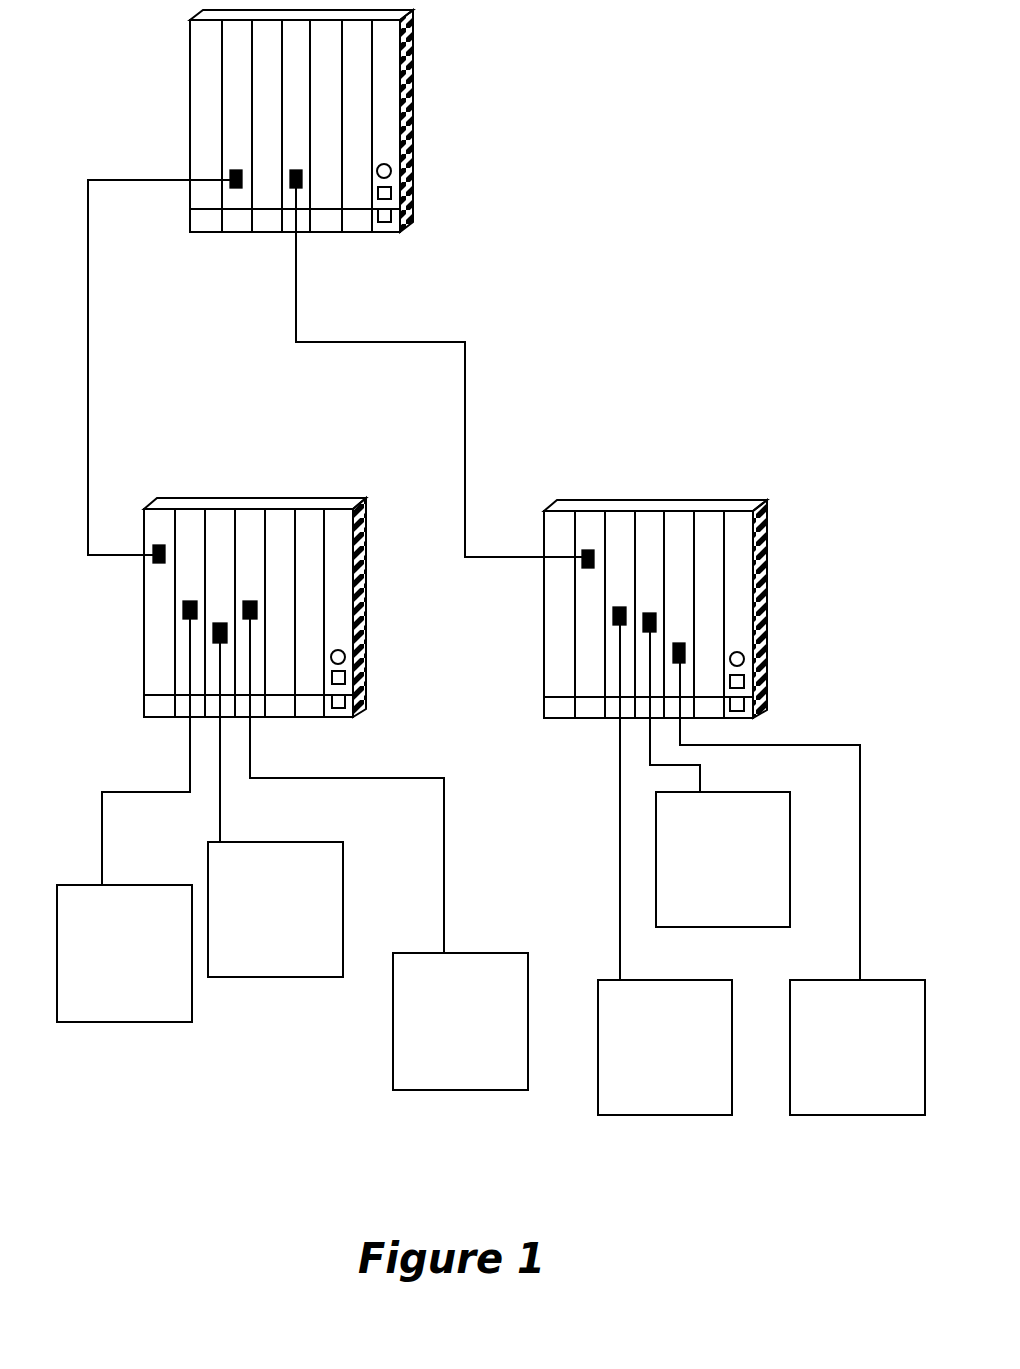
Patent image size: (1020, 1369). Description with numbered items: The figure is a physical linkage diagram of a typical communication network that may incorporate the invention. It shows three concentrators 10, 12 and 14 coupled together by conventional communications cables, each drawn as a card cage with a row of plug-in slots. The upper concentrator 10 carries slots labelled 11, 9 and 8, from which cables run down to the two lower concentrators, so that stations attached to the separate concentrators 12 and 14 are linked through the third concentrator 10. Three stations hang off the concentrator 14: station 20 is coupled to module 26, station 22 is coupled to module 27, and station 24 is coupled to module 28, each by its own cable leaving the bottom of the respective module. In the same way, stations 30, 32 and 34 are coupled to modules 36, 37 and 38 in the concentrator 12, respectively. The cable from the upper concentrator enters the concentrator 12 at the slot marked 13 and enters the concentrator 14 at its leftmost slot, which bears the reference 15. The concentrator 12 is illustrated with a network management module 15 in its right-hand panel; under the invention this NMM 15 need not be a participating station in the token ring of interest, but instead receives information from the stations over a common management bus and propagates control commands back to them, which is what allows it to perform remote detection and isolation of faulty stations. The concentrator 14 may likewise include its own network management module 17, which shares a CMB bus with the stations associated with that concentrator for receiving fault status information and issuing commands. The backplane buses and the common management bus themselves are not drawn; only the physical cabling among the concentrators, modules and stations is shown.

The communication module 8 is at (305, 78).
The communication module 9 is at (246, 78).
The concentrator 10 is at (413, 97).
The processor module 11 is at (217, 78).
The concentrator 12 is at (767, 587).
The adapter module 13 is at (603, 545).
The concentrator 14 is at (366, 588).
The network management module 15 is at (172, 541).
The network management module 17 is at (342, 527).
The station 20 is at (134, 971).
The station 22 is at (286, 923).
The station 24 is at (471, 1038).
The module 26 is at (203, 541).
The module 27 is at (233, 541).
The module 28 is at (263, 541).
The station 30 is at (676, 1061).
The station 32 is at (867, 1061).
The station 34 is at (732, 873).
The module 36 is at (633, 545).
The module 37 is at (663, 545).
The module 38 is at (693, 545).